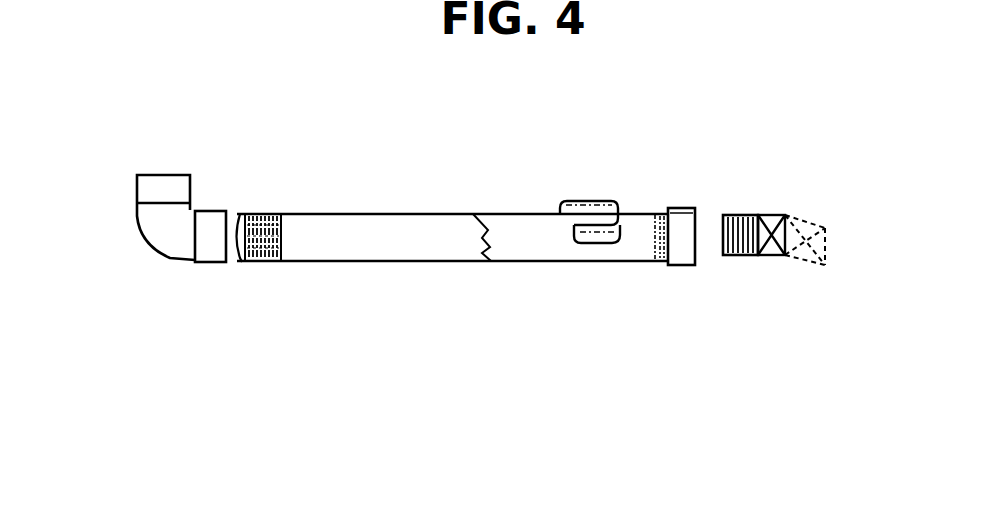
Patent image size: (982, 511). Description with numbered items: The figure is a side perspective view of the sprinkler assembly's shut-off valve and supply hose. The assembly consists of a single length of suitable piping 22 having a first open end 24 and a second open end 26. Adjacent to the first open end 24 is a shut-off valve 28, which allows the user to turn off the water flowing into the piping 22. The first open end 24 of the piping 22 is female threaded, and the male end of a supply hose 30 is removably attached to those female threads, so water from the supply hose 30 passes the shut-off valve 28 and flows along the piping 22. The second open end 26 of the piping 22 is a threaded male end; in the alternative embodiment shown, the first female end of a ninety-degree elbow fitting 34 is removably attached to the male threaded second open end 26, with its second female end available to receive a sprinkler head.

The piping 22 is at (376, 222).
The first open end 24 is at (695, 268).
The second open end 26 is at (242, 262).
The shut-off valve 28 is at (600, 212).
The supply hose 30 is at (735, 255).
The ninety-degree elbow fitting 34 is at (148, 186).